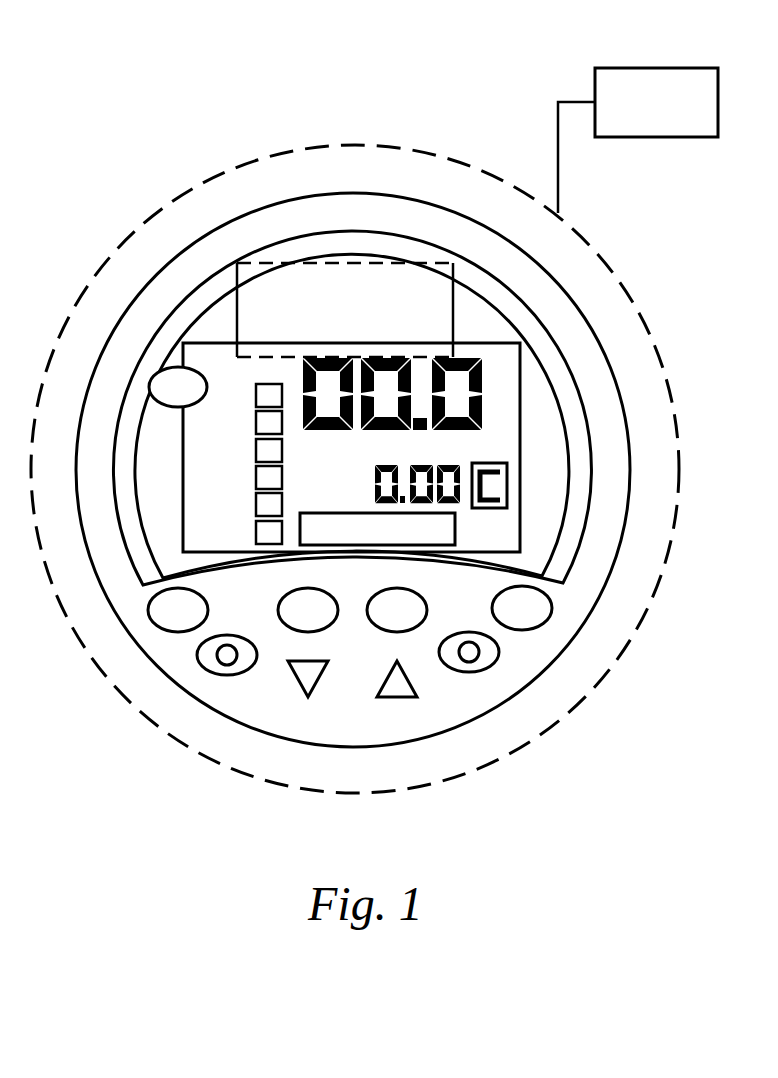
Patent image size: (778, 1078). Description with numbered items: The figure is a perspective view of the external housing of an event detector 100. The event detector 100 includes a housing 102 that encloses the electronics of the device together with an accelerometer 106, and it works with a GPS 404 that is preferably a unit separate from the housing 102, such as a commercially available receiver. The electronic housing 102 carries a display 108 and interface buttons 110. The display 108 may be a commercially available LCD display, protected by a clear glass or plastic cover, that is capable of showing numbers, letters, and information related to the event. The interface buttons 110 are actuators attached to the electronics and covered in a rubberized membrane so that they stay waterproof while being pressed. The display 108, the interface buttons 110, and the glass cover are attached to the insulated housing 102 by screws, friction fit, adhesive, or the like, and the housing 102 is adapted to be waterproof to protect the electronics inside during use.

The event detector 100 is at (613, 278).
The housing 102 is at (533, 735).
The accelerometer 106 is at (237, 310).
The display 108 is at (545, 465).
The interface buttons 110 is at (353, 718).
The GPS receiver 404 is at (655, 68).